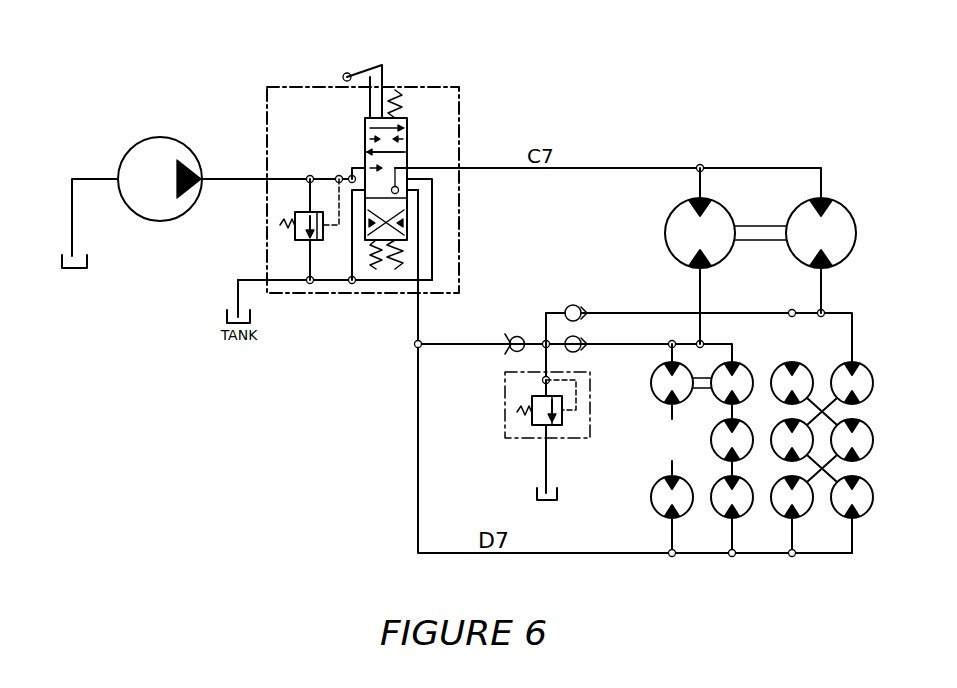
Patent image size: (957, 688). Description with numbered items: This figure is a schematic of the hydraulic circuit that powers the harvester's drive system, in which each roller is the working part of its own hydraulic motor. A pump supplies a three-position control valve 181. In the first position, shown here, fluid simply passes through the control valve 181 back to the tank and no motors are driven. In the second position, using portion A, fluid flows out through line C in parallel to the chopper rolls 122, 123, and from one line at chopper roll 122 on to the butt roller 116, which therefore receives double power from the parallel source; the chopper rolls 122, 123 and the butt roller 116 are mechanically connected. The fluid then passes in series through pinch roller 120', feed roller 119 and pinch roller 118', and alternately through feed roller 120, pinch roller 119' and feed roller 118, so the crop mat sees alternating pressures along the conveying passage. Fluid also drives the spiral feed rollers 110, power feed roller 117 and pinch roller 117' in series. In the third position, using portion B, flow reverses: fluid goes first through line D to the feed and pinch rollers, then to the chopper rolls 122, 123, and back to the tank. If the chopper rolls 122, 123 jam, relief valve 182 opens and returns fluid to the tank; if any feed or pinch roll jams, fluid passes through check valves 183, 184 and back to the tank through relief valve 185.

The control valve 181 is at (460, 106).
The relief valve 182 is at (282, 230).
The check valve 183 is at (579, 299).
The check valve 184 is at (580, 341).
The relief valve 185 is at (535, 413).
The chopper roll 122 is at (715, 231).
The chopper roll 123 is at (838, 231).
The butt roller 116 is at (718, 372).
The spiral feed rollers 110 is at (660, 493).
The power feed roller 117 is at (719, 449).
The pinch roller 117' is at (719, 510).
The feed roller 118 is at (866, 510).
The pinch roller 118' is at (782, 510).
The feed roller 119 is at (868, 449).
The pinch roller 119' is at (782, 449).
The feed roller 120 is at (868, 392).
The pinch roller 120' is at (780, 392).